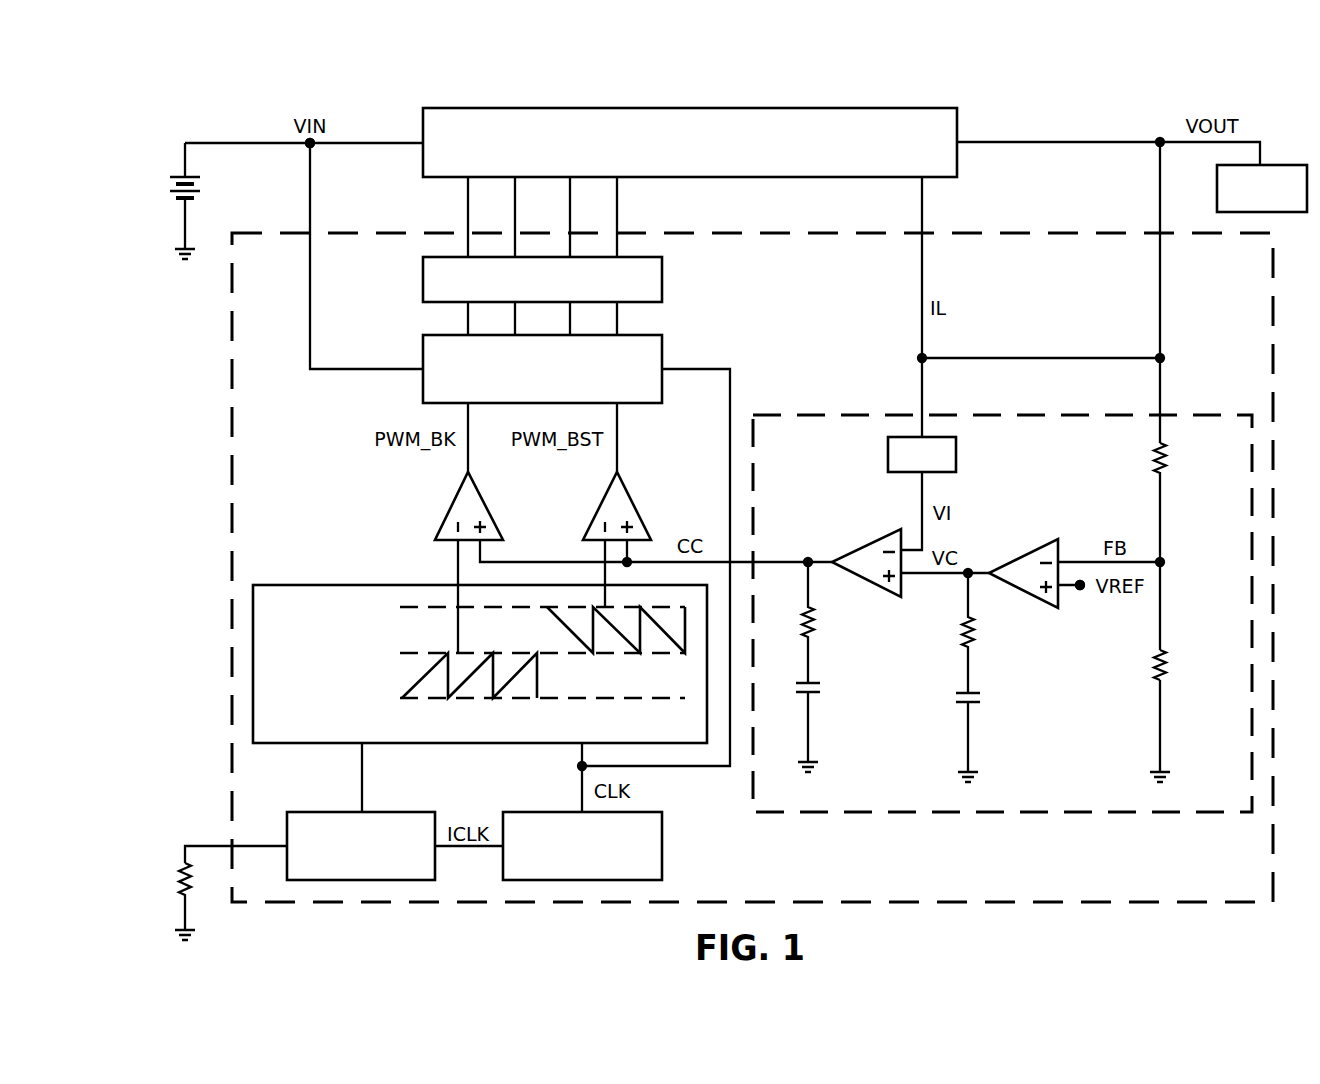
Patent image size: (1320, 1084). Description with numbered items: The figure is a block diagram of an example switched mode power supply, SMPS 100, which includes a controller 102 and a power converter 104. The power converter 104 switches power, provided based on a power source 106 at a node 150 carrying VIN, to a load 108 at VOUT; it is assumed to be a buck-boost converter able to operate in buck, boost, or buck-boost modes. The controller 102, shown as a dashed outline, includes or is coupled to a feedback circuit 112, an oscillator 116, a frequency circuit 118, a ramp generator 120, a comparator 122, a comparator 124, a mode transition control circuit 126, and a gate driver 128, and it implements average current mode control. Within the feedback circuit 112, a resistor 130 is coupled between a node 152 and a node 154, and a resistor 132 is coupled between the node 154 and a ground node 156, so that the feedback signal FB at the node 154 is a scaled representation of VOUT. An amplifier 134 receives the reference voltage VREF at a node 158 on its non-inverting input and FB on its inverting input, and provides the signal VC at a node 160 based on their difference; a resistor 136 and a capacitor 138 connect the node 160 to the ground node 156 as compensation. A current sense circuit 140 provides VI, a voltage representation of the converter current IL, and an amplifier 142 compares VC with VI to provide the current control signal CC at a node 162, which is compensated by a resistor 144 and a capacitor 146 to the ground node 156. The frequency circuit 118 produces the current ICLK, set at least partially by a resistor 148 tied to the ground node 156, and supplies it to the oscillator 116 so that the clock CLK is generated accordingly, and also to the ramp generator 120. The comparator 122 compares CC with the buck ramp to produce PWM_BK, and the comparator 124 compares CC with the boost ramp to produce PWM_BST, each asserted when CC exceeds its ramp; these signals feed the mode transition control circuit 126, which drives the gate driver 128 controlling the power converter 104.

The SMPS 100 is at (1074, 94).
The controller 102 is at (227, 622).
The power converter 104 is at (689, 108).
The power source 106 is at (163, 187).
The load 108 is at (1276, 166).
The feedback circuit 112 is at (1002, 817).
The oscillator 116 is at (560, 812).
The frequency circuit 118 is at (320, 812).
The ramp generator 120 is at (475, 743).
The comparator 122 is at (451, 503).
The comparator 124 is at (599, 503).
The mode transition control circuit 126 is at (421, 359).
The gate driver 128 is at (424, 282).
The resistor 130 is at (1167, 459).
The resistor 132 is at (1168, 666).
The amplifier 134 is at (1025, 560).
The resistor 136 is at (973, 634).
The capacitor 138 is at (981, 700).
The current sense circuit 140 is at (888, 457).
The amplifier 142 is at (865, 550).
The resistor 144 is at (813, 619).
The capacitor 146 is at (821, 688).
The resistor 148 is at (178, 882).
The node 150 is at (303, 148).
The node 152 is at (1166, 358).
The node 154 is at (1164, 560).
The ground node 156 is at (172, 254).
The node 158 is at (1084, 590).
The node 160 is at (960, 576).
The node 162 is at (807, 560).